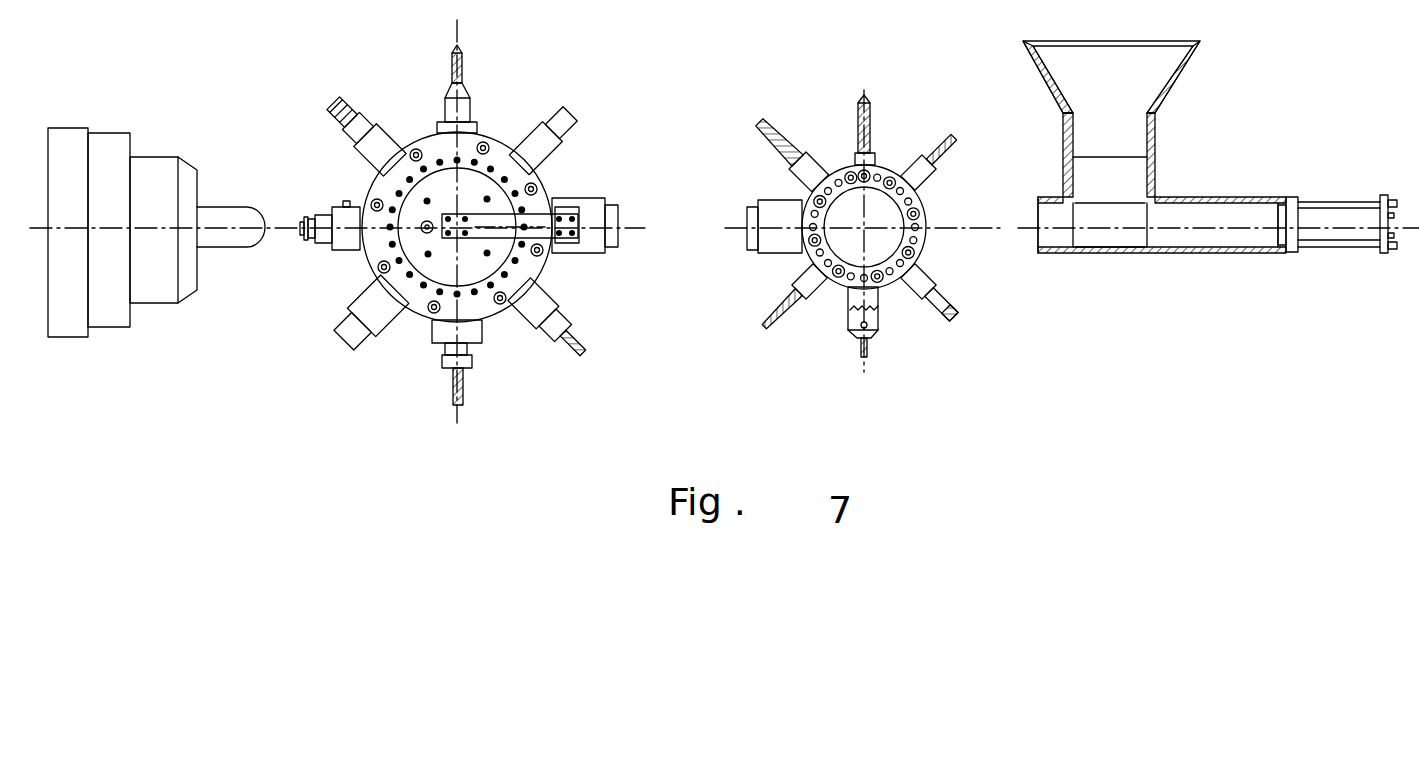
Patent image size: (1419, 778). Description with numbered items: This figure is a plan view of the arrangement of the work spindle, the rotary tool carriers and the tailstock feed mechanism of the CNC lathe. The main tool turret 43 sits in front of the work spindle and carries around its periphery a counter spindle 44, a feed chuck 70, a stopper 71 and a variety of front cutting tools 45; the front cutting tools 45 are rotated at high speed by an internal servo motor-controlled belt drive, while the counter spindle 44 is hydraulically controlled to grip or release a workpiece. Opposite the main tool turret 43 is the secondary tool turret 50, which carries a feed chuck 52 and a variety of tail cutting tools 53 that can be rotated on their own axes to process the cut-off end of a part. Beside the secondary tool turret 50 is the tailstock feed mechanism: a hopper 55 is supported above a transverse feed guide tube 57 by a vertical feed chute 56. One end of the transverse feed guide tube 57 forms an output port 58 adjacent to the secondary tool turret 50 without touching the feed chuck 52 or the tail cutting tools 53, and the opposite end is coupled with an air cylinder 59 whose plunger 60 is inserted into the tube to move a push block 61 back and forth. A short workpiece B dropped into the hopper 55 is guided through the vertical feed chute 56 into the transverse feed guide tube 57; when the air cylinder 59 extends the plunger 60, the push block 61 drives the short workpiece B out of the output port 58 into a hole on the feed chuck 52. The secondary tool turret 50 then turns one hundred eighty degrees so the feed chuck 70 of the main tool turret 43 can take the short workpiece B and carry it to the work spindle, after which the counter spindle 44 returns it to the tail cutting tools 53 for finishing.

The main tool turret 43 is at (422, 305).
The counter spindle 44 is at (596, 247).
The front cutting tools 45 is at (548, 333).
The secondary tool turret 50 is at (847, 252).
The feed chuck 52 is at (770, 247).
The tail cutting tools 53 is at (870, 350).
The hopper 55 is at (1200, 45).
The vertical feed chute 56 is at (1138, 140).
The transverse feed guide tube 57 is at (1072, 240).
The output port 58 is at (1035, 228).
The air cylinder 59 is at (1338, 232).
The plunger 60 is at (1288, 232).
The push block 61 is at (1245, 232).
The feed chuck 70 is at (372, 338).
The stopper 71 is at (322, 250).
The short workpiece B is at (1118, 233).